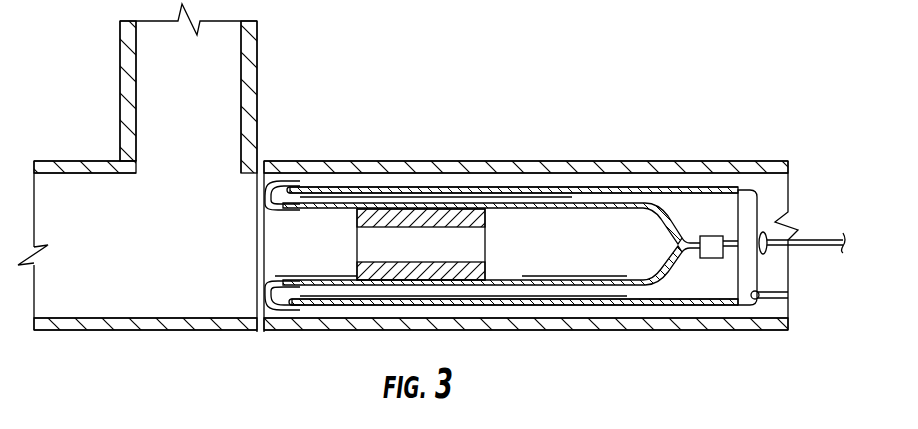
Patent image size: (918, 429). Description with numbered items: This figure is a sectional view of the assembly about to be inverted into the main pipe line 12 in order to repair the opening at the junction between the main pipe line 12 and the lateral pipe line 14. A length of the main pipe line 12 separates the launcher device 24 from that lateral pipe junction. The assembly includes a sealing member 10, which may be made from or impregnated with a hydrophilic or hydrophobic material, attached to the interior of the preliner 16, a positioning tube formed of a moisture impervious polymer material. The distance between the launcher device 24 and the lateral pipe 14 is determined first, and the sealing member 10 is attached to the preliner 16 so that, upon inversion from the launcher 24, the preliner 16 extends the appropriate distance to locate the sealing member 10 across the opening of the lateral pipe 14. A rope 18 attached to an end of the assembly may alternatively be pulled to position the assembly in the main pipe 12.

The sealing member 10 is at (452, 210).
The main pipe line 12 is at (676, 161).
The lateral pipe line 14 is at (257, 88).
The preliner 16 is at (600, 205).
The rope 18 is at (802, 247).
The launcher device 24 is at (484, 189).